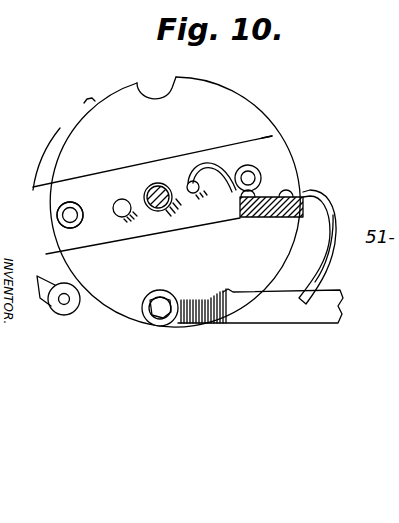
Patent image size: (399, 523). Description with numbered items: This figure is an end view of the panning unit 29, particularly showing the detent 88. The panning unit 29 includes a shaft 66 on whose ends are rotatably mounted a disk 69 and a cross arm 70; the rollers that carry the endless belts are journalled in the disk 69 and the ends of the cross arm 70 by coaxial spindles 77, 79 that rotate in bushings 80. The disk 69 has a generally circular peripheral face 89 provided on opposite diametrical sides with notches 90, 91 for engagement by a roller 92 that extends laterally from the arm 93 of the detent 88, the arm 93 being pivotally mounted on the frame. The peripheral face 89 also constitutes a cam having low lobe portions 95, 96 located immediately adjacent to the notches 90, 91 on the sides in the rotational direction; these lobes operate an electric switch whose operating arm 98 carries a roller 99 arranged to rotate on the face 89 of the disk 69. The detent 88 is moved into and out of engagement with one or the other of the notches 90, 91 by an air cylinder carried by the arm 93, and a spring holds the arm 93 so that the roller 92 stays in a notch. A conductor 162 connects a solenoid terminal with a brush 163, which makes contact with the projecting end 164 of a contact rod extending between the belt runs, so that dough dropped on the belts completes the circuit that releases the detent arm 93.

The panning unit 29 is at (268, 137).
The shaft 66 is at (163, 208).
The disk 69 is at (232, 113).
The cross arm 70 is at (272, 163).
The spindle 77 is at (252, 178).
The spindle 79 is at (73, 213).
The bushings 80 is at (80, 222).
The detent 88 is at (167, 323).
The peripheral face 89 is at (60, 128).
The notch 90 is at (152, 97).
The notch 91 is at (140, 313).
The roller 92 is at (163, 298).
The arm 93 is at (278, 318).
The low lobe portion 95 is at (103, 91).
The low lobe portion 96 is at (225, 315).
The operating arm 98 is at (50, 284).
The roller 99 is at (67, 312).
The conductor 162 is at (330, 243).
The brush 163 is at (210, 192).
The projecting end of contact rod 164 is at (193, 180).